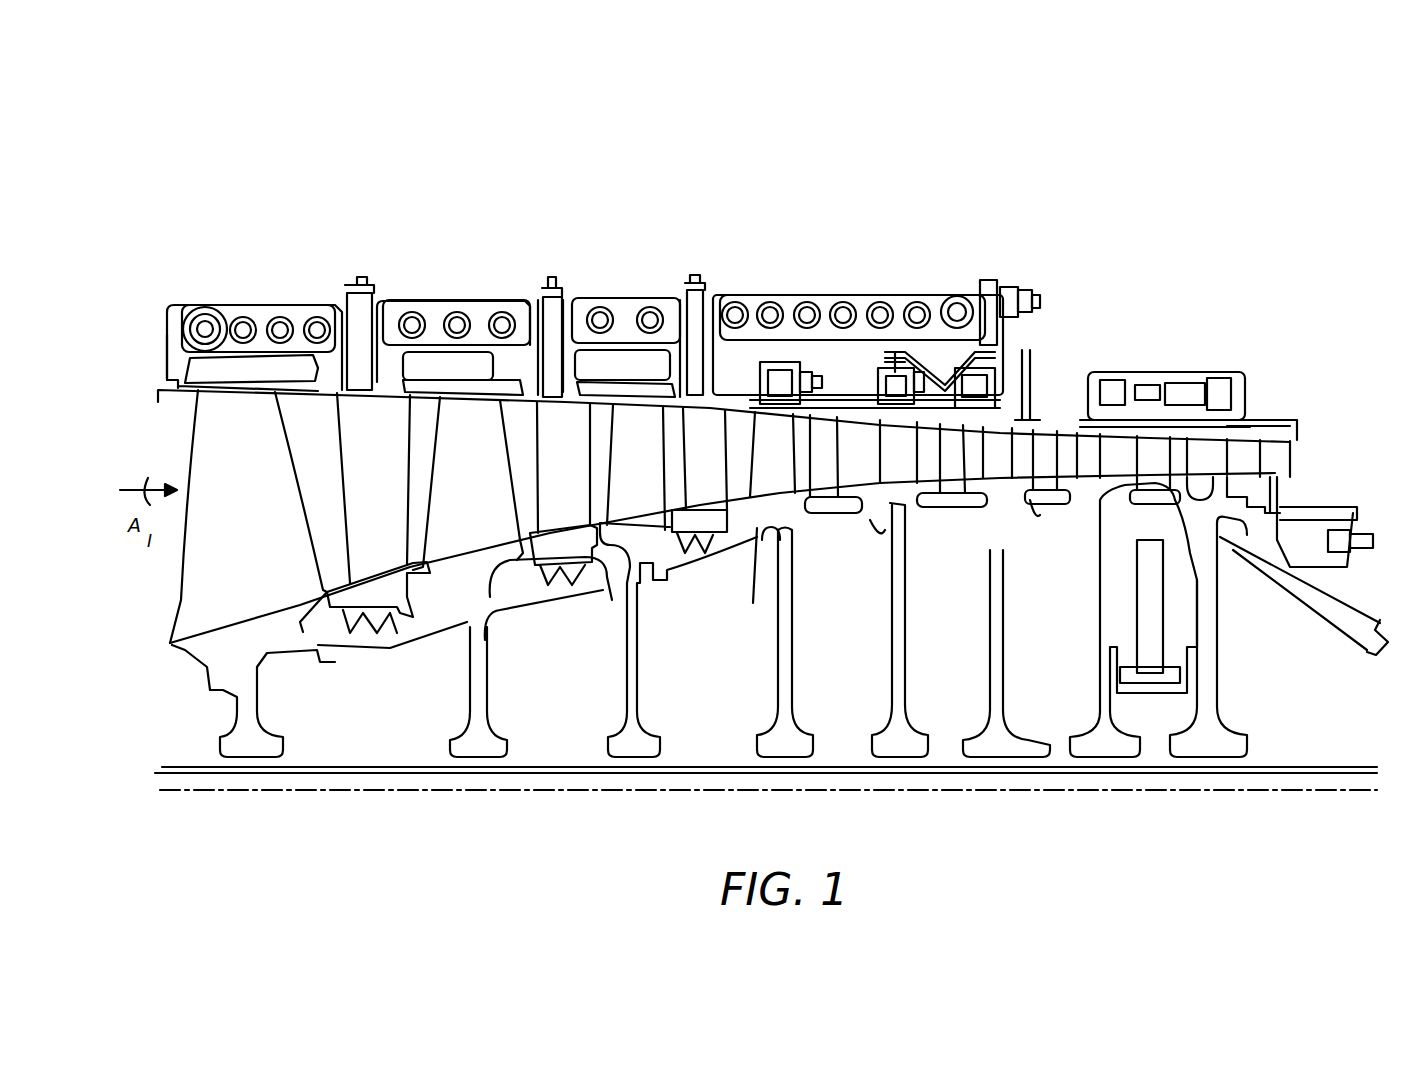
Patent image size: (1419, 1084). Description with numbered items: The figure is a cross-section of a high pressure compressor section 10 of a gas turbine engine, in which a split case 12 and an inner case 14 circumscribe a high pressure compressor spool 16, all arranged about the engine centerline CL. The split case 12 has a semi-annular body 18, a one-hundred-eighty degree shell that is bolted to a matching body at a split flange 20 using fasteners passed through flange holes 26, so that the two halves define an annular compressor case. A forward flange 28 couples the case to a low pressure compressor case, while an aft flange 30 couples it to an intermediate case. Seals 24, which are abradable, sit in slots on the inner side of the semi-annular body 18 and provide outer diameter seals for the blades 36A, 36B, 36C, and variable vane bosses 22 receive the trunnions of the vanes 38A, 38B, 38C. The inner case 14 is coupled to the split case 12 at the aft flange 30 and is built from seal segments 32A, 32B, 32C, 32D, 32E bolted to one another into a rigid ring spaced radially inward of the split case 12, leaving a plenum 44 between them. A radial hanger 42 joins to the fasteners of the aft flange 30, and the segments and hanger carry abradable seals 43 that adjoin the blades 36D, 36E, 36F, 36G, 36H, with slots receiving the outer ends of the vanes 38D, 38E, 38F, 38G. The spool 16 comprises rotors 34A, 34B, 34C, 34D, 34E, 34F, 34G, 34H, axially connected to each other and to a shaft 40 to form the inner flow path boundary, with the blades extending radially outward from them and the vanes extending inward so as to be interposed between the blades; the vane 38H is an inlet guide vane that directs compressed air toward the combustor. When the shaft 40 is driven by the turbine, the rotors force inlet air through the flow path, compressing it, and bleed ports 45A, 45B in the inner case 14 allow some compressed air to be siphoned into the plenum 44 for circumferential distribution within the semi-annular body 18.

The high pressure compressor section 10 is at (1108, 258).
The split case 12 is at (168, 305).
The inner case 14 is at (1300, 410).
The high pressure compressor spool 16 is at (215, 712).
The semi-annular body 18 is at (440, 350).
The split flange 20 is at (625, 300).
The variable vane bosses 22 is at (570, 300).
The seals 24 is at (280, 370).
The flange holes 26 is at (243, 315).
The forward flange 28 is at (167, 340).
The aft flange 30 is at (990, 300).
The seal segment 32A is at (778, 368).
The seal segment 32B is at (905, 352).
The seal segment 32C is at (958, 355).
The seal segment 32D is at (1025, 340).
The seal segment 32E is at (1210, 365).
The rotor 34A is at (258, 690).
The rotor 34B is at (488, 675).
The rotor 34C is at (637, 660).
The rotor 34D is at (792, 655).
The rotor 34E is at (905, 650).
The rotor 34F is at (1003, 652).
The rotor 34G is at (1100, 628).
The rotor 34H is at (1217, 630).
The blade 36A is at (266, 520).
The blade 36B is at (494, 505).
The blade 36C is at (662, 485).
The blade 36D is at (772, 495).
The blade 36E is at (903, 490).
The blade 36F is at (990, 458).
The blade 36G is at (1100, 457).
The blade 36H is at (1203, 457).
The vane 38A is at (401, 458).
The vane 38B is at (589, 457).
The vane 38C is at (700, 553).
The vane 38D is at (790, 497).
The vane 38E is at (913, 485).
The vane 38F is at (1005, 470).
The vane 38G is at (1157, 457).
The vane 38H is at (1290, 468).
The shaft 40 is at (1340, 615).
The radial hanger 42 is at (1026, 410).
The seals 43 is at (1190, 515).
The plenum 44 is at (755, 300).
The bleed port 45A is at (890, 350).
The bleed port 45B is at (1120, 555).
The engine centerline CL is at (1285, 793).